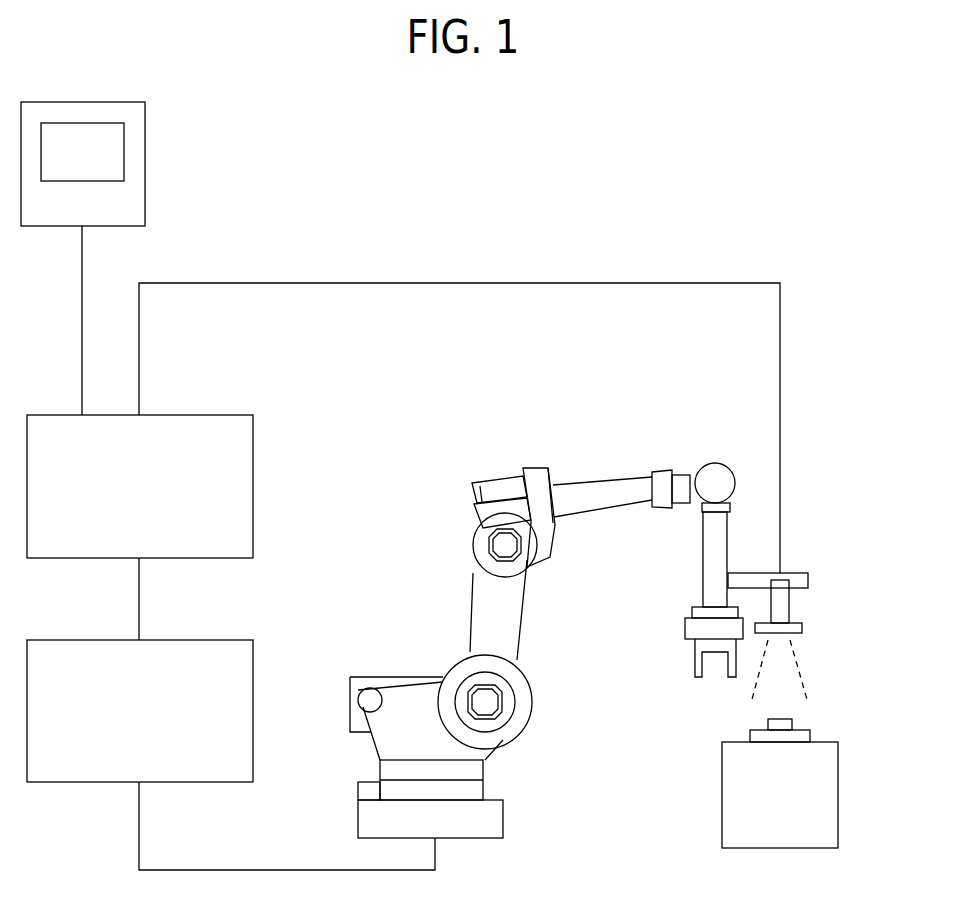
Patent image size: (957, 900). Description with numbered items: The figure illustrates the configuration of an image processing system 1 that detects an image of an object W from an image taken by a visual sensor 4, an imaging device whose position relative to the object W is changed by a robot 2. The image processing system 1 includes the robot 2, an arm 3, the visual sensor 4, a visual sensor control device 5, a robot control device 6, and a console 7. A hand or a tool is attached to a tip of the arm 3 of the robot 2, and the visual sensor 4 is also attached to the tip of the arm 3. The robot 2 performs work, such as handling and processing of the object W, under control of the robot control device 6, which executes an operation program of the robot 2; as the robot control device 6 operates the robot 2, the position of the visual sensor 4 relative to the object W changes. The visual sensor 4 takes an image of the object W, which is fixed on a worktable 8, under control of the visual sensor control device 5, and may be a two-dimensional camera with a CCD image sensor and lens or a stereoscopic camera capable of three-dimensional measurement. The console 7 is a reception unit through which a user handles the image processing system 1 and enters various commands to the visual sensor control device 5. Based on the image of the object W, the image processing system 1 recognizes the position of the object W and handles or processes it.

The image processing system 1 is at (848, 320).
The robot 2 is at (410, 677).
The arm 3 is at (702, 580).
The visual sensor 4 is at (790, 605).
The visual sensor control device 5 is at (185, 413).
The robot control device 6 is at (185, 638).
The console 7 is at (147, 150).
The worktable 8 is at (838, 795).
The object W is at (792, 724).